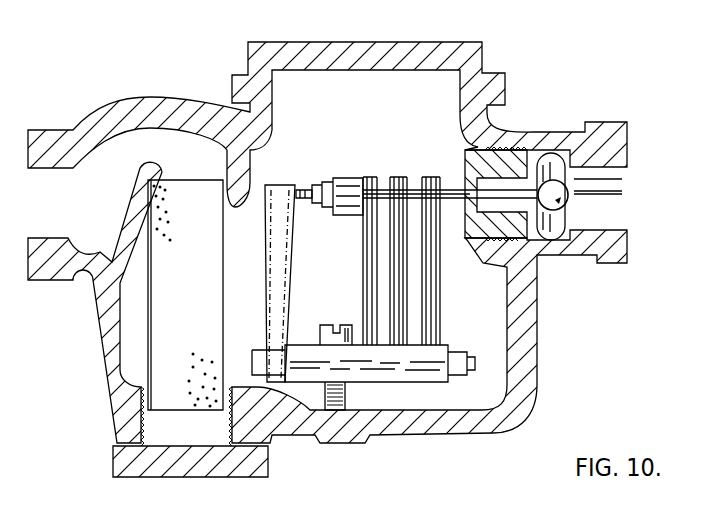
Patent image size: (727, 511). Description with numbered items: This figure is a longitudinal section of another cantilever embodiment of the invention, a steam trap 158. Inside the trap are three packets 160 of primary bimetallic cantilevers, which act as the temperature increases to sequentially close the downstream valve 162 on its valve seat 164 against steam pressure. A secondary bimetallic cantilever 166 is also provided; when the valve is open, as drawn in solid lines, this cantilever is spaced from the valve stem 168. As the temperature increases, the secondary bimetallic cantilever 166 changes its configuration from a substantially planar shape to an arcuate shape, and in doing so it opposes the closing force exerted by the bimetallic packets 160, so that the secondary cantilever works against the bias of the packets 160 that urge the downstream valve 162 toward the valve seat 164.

The steam trap 158 is at (400, 42).
The packets of primary bimetallic cantilevers 160 is at (397, 163).
The downstream valve 162 is at (562, 208).
The valve seat 164 is at (490, 157).
The secondary bimetallic cantilever 166 is at (272, 185).
The valve stem 168 is at (298, 198).